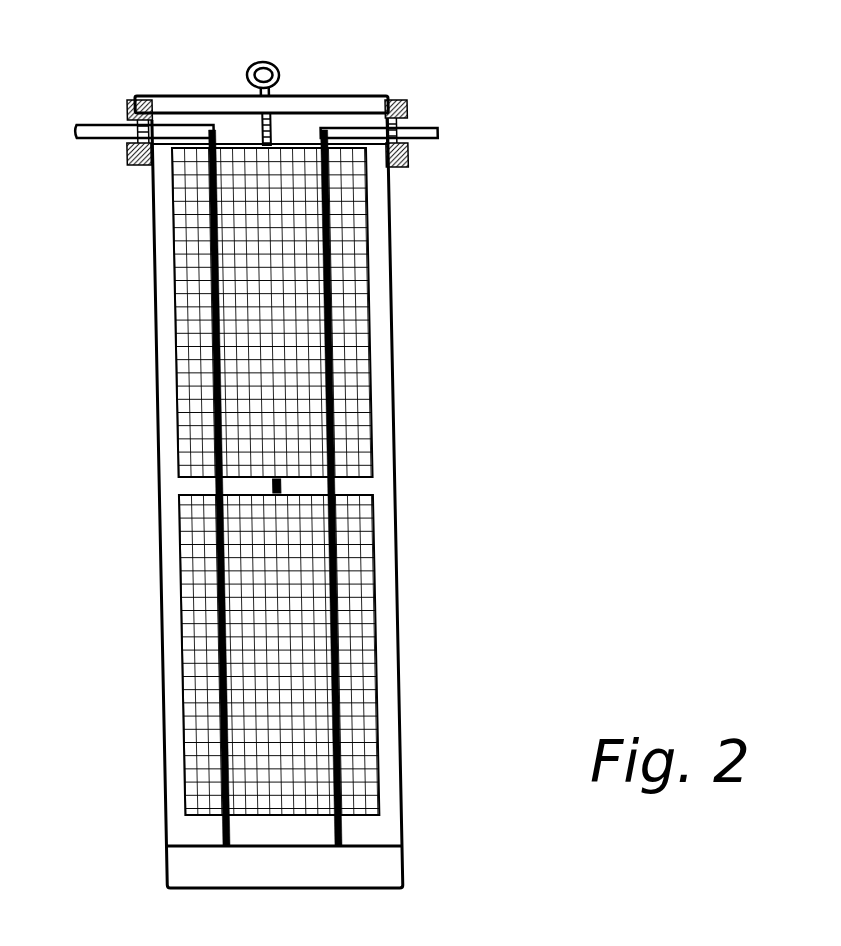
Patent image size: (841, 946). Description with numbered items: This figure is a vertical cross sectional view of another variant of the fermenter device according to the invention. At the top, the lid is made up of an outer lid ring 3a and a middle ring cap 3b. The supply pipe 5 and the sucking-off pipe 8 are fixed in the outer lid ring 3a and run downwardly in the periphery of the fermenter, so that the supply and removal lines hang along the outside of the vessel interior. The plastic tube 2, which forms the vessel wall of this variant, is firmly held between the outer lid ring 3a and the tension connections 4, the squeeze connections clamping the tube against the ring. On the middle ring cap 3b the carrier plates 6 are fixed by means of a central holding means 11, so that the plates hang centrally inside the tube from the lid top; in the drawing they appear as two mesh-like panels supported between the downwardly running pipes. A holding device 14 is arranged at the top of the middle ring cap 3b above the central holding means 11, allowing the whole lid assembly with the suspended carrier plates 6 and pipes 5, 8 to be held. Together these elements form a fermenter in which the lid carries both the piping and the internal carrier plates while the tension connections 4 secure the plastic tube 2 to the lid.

The plastic tube 2 is at (396, 268).
The outer lid ring 3a is at (400, 118).
The middle ring cap 3b is at (323, 97).
The tension connections 4 is at (400, 160).
The supply pipe 5 is at (435, 140).
The carrier plates 6 is at (373, 340).
The sucking-off pipe 8 is at (88, 147).
The central holding means 11 is at (283, 123).
The holding device 14 is at (266, 62).